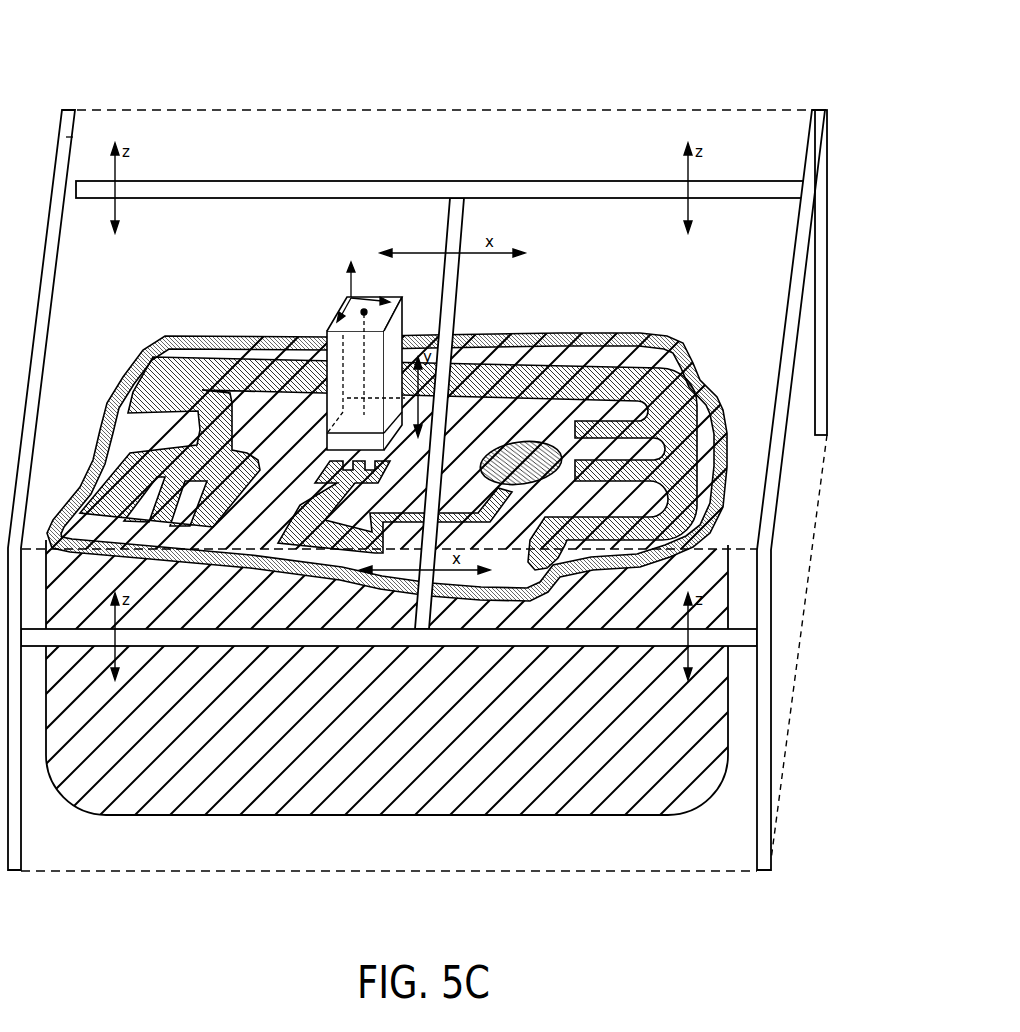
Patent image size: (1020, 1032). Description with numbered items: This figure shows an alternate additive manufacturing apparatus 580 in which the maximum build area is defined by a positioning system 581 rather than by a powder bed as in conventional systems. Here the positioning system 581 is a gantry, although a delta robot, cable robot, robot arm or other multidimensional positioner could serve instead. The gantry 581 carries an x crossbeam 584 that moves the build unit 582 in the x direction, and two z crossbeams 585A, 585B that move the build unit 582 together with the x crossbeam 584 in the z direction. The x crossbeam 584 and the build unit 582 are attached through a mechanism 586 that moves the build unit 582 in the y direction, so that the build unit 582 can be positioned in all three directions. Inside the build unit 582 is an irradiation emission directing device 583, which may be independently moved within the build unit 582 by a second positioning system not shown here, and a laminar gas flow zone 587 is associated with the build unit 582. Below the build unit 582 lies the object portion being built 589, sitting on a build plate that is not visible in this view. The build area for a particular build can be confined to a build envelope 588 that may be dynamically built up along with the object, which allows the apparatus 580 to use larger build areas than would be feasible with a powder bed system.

The apparatus 580 is at (479, 98).
The positioning system 581 is at (67, 118).
The build unit 582 is at (348, 293).
The irradiation emission directing device 583 is at (407, 288).
The x crossbeam 584 is at (458, 290).
The z crossbeam 585A is at (212, 180).
The z crossbeam 585B is at (208, 647).
The mechanism 586 is at (423, 393).
The laminar gas flow zone 587 is at (355, 440).
The build envelope 588 is at (680, 346).
The object portion being built 589 is at (698, 436).